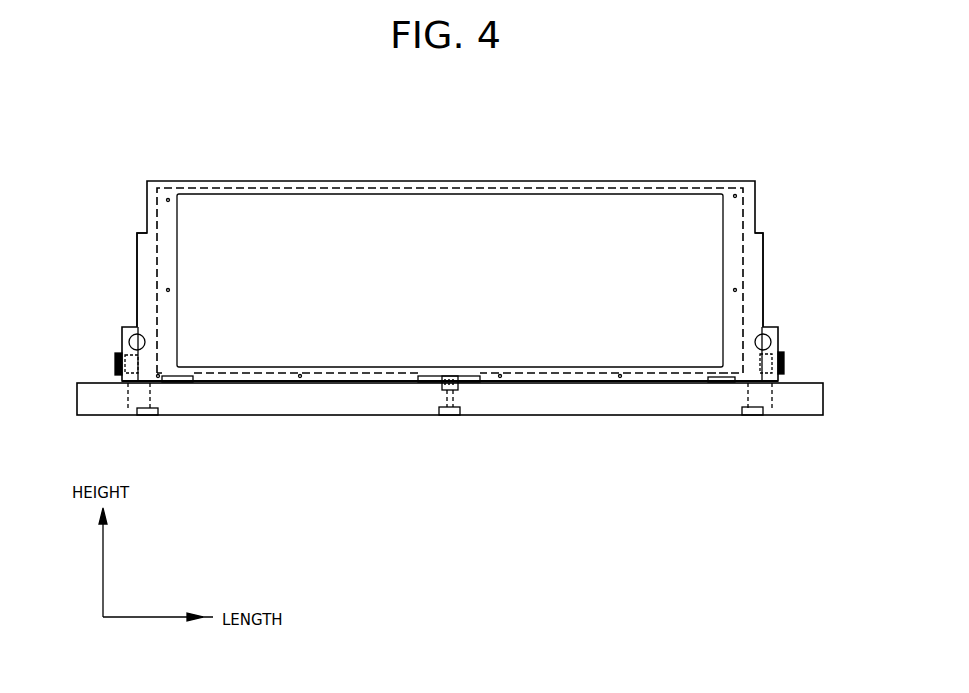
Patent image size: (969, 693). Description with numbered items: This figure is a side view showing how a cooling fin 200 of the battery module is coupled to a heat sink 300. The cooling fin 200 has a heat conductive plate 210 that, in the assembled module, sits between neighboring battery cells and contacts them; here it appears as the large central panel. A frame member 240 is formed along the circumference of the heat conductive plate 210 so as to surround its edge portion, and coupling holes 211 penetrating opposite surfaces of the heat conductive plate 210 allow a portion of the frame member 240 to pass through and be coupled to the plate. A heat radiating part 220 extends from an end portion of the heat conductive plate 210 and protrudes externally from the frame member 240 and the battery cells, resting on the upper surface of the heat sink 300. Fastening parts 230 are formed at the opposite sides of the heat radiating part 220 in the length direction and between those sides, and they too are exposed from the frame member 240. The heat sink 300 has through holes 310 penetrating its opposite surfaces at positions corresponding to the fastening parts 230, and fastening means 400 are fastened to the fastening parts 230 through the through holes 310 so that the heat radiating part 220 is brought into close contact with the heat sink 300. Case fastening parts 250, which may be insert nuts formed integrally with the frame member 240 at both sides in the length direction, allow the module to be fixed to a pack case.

The cooling fin 200 is at (601, 181).
The heat conductive plate 210 is at (283, 212).
The coupling holes 211 is at (158, 232).
The heat radiating part 220 is at (300, 385).
The fastening parts 230 is at (126, 417).
The frame member 240 is at (145, 263).
The case fastening parts 250 is at (115, 357).
The heat sink 300 is at (637, 416).
The through holes 310 is at (466, 395).
The fastening means 400 is at (452, 420).